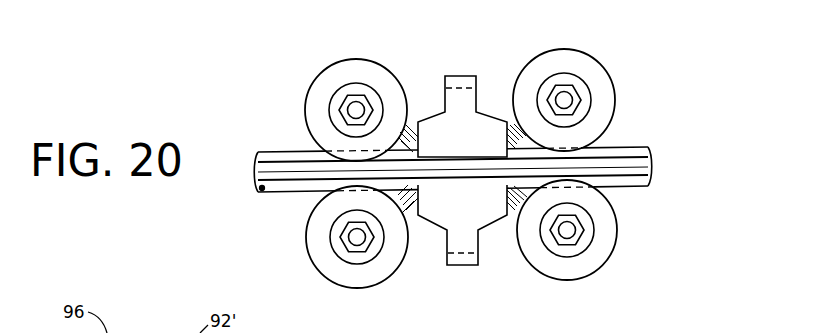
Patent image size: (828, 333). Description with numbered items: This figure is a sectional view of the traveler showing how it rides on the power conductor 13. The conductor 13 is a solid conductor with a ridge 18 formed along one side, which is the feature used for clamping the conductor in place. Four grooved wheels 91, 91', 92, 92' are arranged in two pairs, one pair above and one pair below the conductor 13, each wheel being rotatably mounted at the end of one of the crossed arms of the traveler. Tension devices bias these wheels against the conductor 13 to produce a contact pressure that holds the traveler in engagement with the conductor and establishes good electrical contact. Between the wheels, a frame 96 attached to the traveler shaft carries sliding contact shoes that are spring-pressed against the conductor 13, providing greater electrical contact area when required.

The conductor 13 is at (631, 141).
The ridge 18 is at (650, 168).
The grooved wheel 91 is at (356, 93).
The grooved wheel 91' is at (578, 242).
The grooved wheel 92 is at (357, 257).
The grooved wheel 92' is at (564, 82).
The frame 96 is at (463, 76).